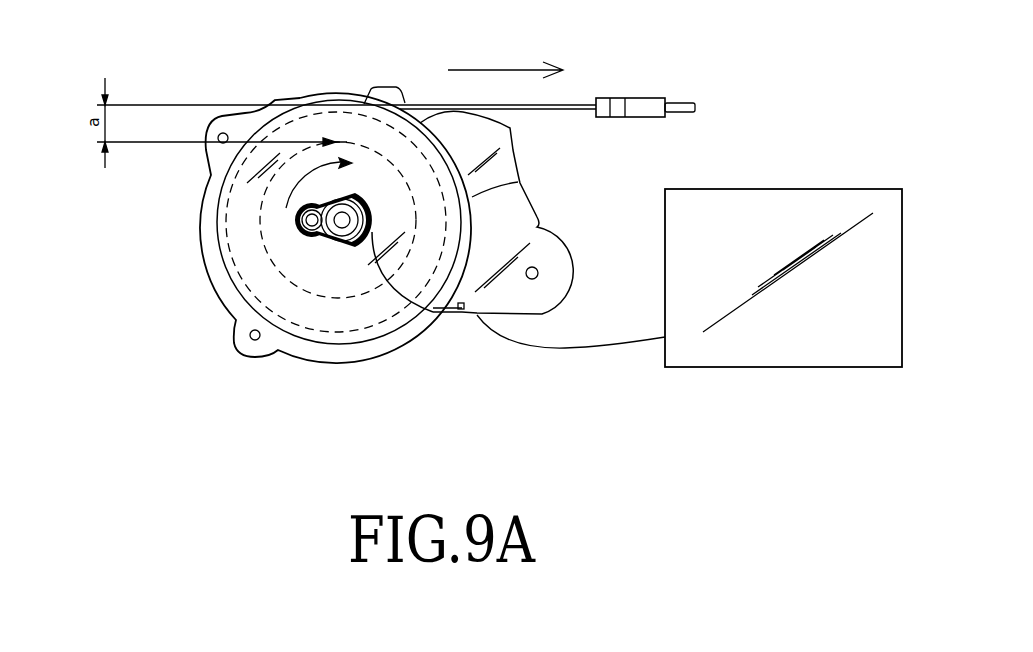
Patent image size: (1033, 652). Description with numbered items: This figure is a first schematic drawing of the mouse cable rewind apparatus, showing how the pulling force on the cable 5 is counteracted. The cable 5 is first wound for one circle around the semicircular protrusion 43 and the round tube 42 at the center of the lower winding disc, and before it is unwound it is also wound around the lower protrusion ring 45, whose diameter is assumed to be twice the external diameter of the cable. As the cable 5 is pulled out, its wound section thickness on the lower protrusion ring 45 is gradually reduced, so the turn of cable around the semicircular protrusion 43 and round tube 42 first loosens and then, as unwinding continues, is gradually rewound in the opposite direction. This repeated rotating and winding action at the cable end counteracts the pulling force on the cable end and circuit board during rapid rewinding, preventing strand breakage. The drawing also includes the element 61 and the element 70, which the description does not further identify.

The cable 5 is at (570, 103).
The round tube 42 is at (320, 245).
The semicircular protrusion 43 is at (313, 197).
The lower protrusion ring 45 is at (423, 218).
The rotation shaft 61 is at (335, 247).
The control unit 70 is at (715, 367).